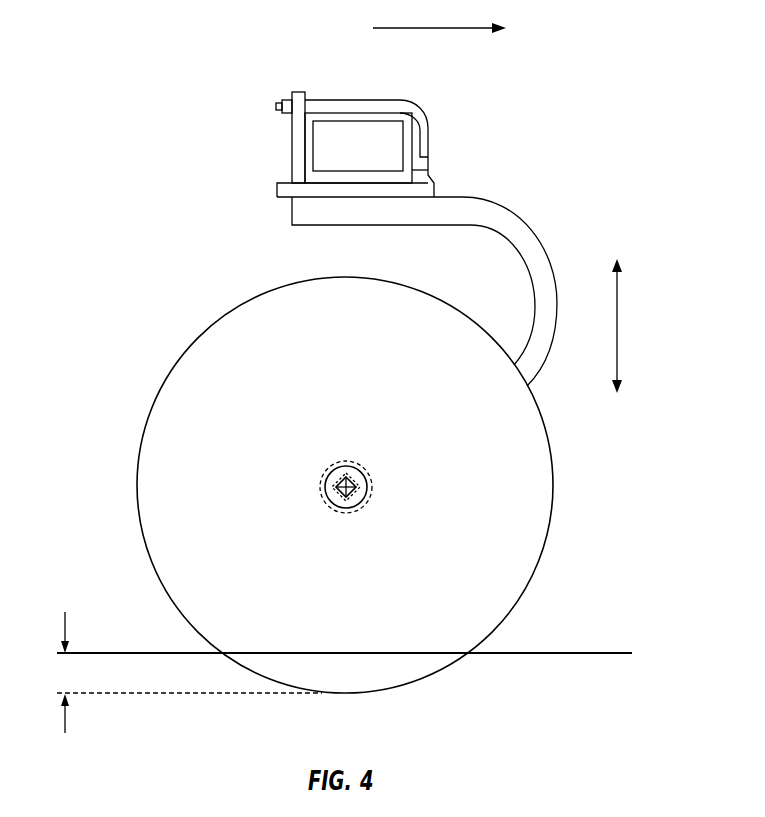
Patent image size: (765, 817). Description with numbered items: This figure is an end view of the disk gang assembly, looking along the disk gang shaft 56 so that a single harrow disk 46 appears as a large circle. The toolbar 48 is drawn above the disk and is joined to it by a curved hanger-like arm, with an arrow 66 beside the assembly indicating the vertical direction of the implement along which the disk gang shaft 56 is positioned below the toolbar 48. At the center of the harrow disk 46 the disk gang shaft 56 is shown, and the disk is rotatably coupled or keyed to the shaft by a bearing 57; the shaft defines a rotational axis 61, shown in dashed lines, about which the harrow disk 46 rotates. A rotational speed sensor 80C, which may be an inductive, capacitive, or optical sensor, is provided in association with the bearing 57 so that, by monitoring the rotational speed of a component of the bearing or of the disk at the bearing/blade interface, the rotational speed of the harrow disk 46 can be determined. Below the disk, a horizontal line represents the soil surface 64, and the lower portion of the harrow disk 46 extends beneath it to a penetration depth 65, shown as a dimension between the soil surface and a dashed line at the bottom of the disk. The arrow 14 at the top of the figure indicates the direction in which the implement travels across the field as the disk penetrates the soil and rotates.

The direction of travel 14 is at (460, 32).
The harrow disk 46 is at (535, 447).
The toolbar 48 is at (358, 117).
The disk gang shaft 56 is at (355, 492).
The bearing 57 is at (360, 467).
The rotational axis 61 is at (325, 500).
The soil surface 64 is at (108, 655).
The penetration depth 65 is at (63, 627).
The vertical direction 66 is at (617, 330).
The rotational speed sensor 80C is at (340, 462).